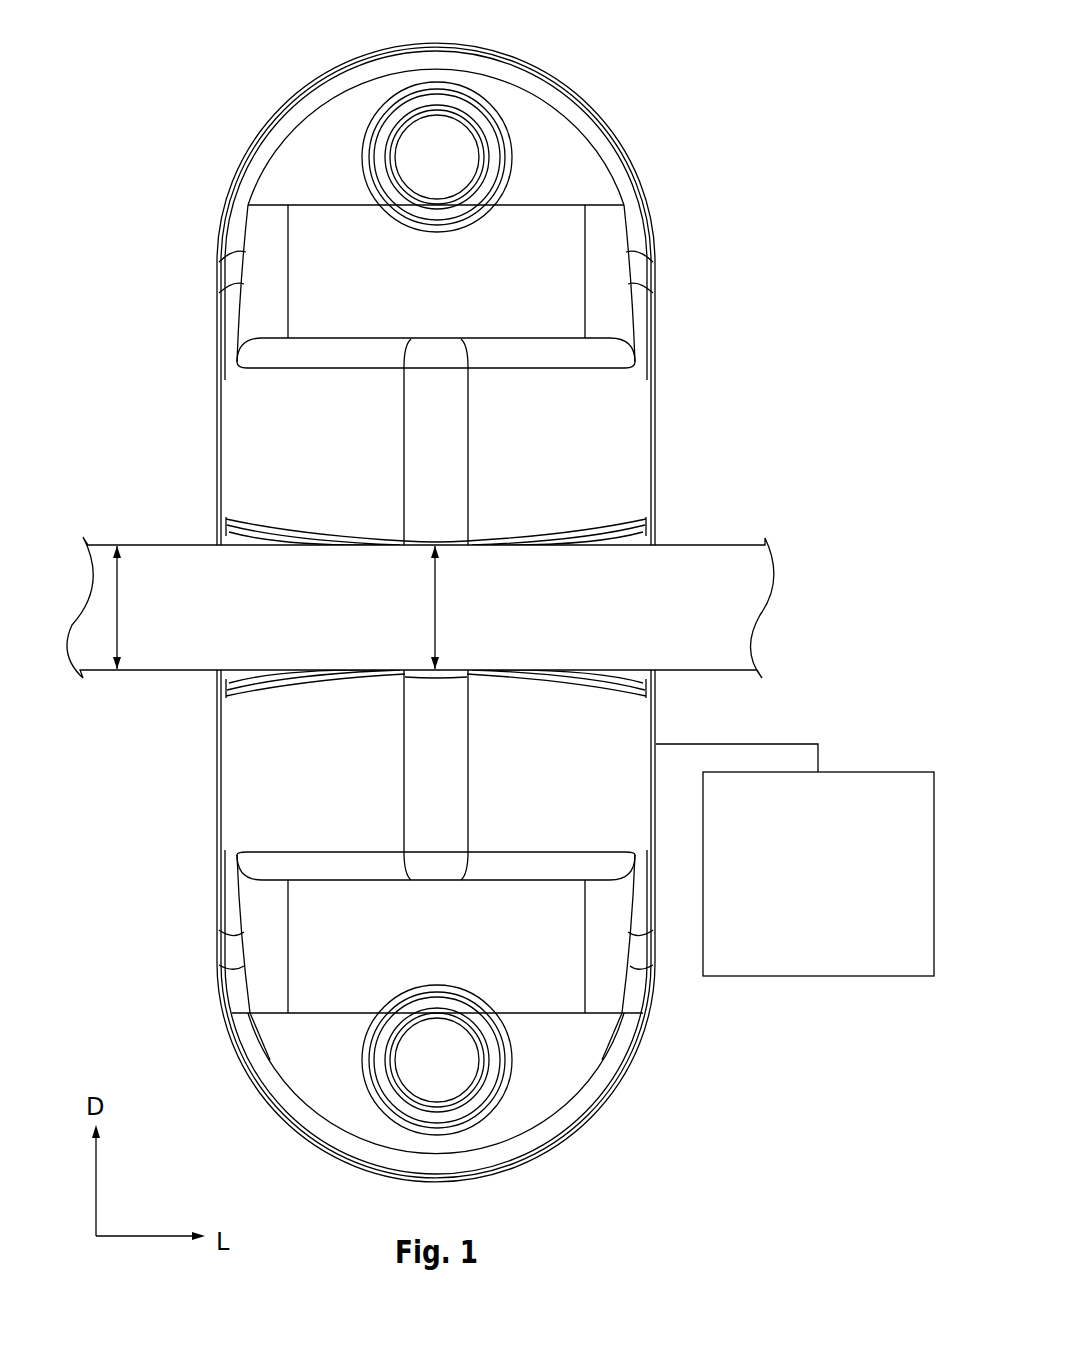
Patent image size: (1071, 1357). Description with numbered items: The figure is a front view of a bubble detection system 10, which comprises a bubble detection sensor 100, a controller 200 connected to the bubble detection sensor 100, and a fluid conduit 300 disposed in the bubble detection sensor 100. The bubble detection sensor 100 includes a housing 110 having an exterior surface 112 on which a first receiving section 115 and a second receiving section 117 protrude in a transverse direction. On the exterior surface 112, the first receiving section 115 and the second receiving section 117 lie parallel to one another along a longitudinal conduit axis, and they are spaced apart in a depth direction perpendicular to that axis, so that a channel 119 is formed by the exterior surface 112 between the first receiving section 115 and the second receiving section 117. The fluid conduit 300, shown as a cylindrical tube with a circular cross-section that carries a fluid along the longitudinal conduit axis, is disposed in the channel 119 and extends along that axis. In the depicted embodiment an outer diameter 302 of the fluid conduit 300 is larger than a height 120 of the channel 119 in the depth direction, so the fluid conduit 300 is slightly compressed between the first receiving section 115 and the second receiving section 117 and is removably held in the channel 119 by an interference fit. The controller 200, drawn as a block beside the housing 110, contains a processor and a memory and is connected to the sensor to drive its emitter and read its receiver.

The bubble detection system 10 is at (697, 45).
The bubble detection sensor 100 is at (213, 192).
The housing 110 is at (218, 325).
The exterior surface 112 is at (572, 232).
The first receiving section 115 is at (597, 450).
The second receiving section 117 is at (258, 770).
The channel 119 is at (206, 540).
The height 120 is at (440, 608).
The controller 200 is at (843, 887).
The fluid conduit 300 is at (702, 534).
The outer diameter 302 is at (115, 608).